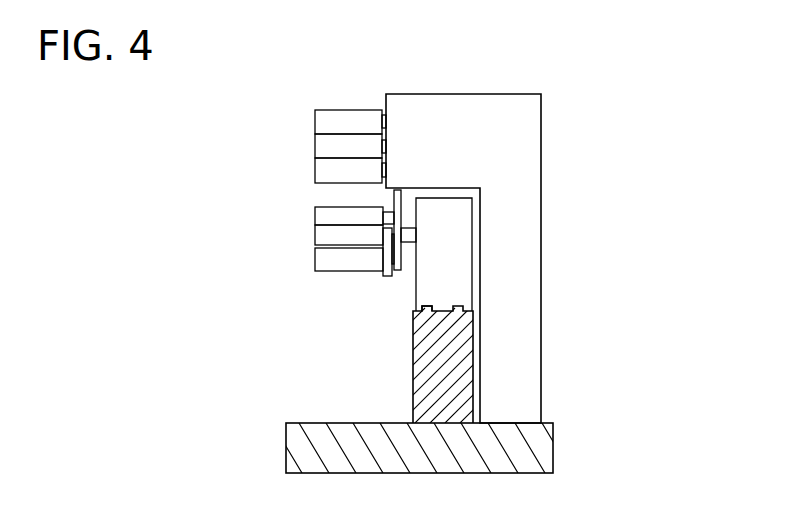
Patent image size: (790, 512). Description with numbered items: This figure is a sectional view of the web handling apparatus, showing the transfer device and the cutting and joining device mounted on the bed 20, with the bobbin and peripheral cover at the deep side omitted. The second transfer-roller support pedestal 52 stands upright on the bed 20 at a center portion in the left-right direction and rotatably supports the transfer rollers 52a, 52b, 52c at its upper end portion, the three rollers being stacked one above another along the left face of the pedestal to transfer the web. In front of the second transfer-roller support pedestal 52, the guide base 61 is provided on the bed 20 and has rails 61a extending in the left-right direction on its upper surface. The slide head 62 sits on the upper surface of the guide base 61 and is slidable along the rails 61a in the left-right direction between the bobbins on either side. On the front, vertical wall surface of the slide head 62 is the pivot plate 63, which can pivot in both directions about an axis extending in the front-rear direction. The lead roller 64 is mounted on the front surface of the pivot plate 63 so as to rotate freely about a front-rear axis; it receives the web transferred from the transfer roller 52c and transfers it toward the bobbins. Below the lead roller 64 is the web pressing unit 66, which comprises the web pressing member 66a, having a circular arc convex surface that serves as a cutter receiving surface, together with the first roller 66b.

The bed 20 is at (286, 443).
The second transfer-roller support pedestal 52 is at (541, 133).
The transfer roller 52a is at (313, 122).
The transfer roller 52b is at (313, 148).
The transfer roller 52c is at (313, 173).
The guide base 61 is at (412, 367).
The rails 61a is at (422, 306).
The slide head 62 is at (472, 242).
The pivot plate 63 is at (394, 268).
The lead roller 64 is at (313, 216).
The web pressing unit 66 is at (312, 278).
The web pressing member 66a is at (313, 233).
The first roller 66b is at (313, 258).